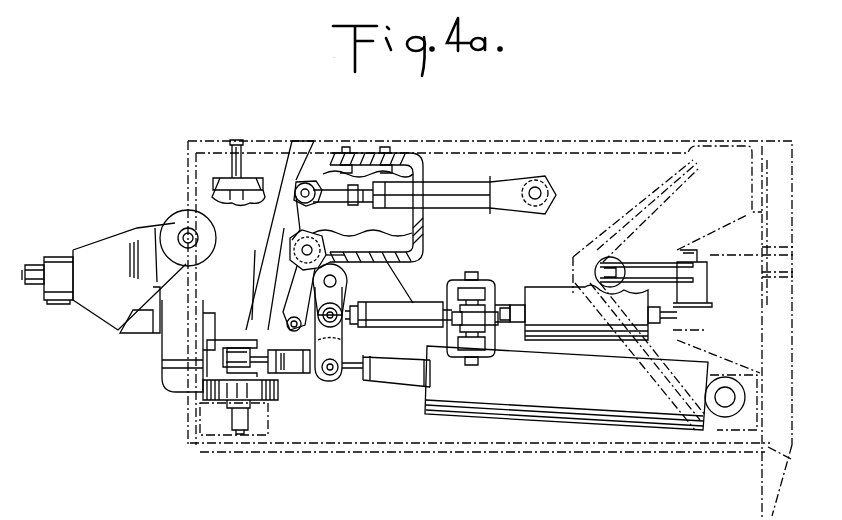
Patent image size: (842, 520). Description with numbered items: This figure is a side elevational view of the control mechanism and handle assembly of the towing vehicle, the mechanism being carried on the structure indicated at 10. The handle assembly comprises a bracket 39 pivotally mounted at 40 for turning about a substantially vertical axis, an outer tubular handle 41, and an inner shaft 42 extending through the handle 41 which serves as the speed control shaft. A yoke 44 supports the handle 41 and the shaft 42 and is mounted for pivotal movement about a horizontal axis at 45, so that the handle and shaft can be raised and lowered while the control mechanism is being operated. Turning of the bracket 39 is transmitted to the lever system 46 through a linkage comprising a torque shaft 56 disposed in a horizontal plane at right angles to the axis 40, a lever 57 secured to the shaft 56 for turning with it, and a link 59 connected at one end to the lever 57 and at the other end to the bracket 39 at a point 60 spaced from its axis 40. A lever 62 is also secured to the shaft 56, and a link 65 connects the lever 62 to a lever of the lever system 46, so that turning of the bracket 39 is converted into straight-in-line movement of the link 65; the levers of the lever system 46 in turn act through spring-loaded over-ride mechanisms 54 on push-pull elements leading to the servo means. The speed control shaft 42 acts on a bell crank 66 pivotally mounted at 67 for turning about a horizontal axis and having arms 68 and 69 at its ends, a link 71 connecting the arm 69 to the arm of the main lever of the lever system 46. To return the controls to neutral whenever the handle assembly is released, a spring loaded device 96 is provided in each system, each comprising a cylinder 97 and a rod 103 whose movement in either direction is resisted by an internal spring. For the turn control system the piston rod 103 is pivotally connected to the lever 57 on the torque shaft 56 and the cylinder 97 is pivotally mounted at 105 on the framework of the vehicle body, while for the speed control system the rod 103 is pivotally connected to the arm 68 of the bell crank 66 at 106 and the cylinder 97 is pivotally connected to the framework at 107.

The mounting plate 10 is at (279, 236).
The bracket 39 is at (149, 374).
The pivot axis 40 is at (236, 140).
The outer tubular handle 41 is at (60, 258).
The inner shaft 42 is at (30, 265).
The yoke 44 is at (113, 250).
The horizontal pivot axis 45 is at (184, 233).
The lever system 46 is at (505, 295).
The spring-loaded over-ride mechanism 54 is at (545, 300).
The torque shaft 56 is at (338, 283).
The lever 57 is at (336, 344).
The link 59 is at (305, 368).
The connection point 60 is at (228, 360).
The lever 62 is at (340, 316).
The link 65 is at (420, 306).
The bell crank 66 is at (285, 191).
The pivot 67 is at (313, 247).
The arm 68 is at (310, 186).
The arm 69 is at (283, 360).
The link 71 is at (298, 297).
The spring loaded device 96 is at (452, 190).
The cylinder 97 is at (538, 185).
The rod 103 is at (358, 197).
The pivot mounting 105 is at (723, 402).
The connection point 106 is at (290, 184).
The pivot connection 107 is at (544, 193).